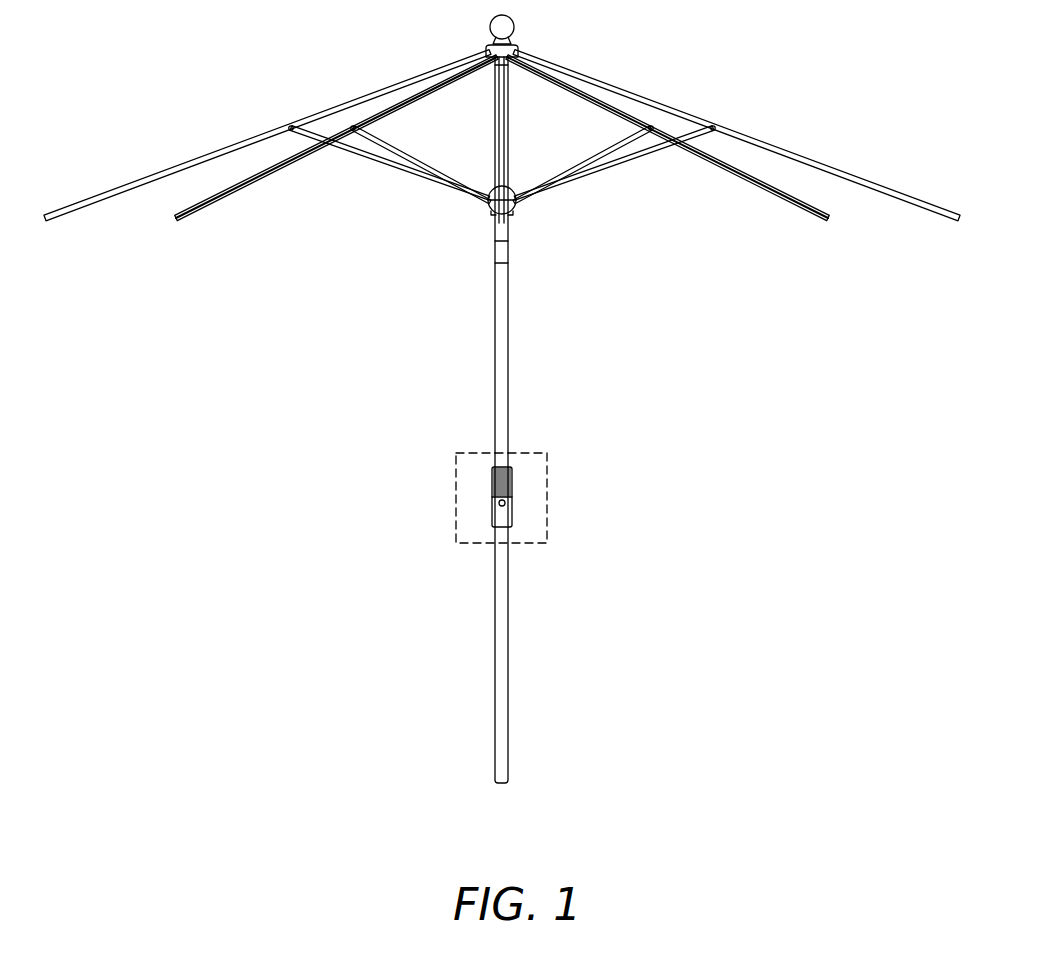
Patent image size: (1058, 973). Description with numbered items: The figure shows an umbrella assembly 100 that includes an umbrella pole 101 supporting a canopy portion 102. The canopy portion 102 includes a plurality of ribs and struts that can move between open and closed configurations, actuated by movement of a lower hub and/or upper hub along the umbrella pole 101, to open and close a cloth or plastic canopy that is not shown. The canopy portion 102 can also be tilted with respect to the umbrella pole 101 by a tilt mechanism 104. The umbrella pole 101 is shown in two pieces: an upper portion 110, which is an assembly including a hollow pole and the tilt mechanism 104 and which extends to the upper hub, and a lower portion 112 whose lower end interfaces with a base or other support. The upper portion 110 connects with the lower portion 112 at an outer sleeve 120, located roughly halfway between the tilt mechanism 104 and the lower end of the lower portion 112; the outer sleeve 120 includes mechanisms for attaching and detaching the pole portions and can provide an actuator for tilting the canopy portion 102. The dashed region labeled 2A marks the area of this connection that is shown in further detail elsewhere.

The umbrella assembly 100 is at (502, 399).
The umbrella pole 101 is at (528, 420).
The canopy portion 102 is at (805, 148).
The tilt mechanism 104 is at (500, 251).
The upper portion 110 is at (510, 280).
The lower portion 112 is at (510, 645).
The outer sleeve 120 is at (520, 503).
The detail view region 2A is at (520, 453).